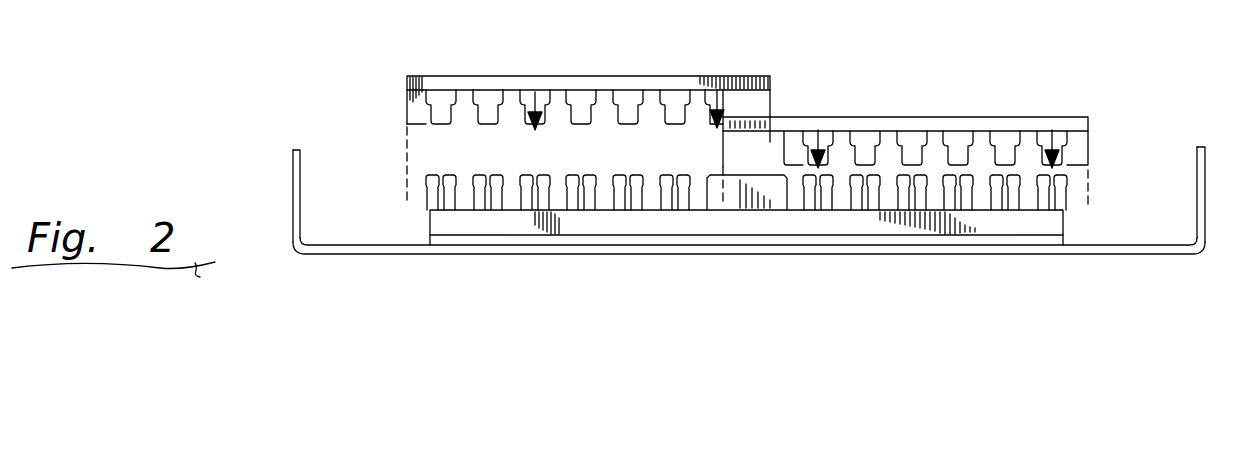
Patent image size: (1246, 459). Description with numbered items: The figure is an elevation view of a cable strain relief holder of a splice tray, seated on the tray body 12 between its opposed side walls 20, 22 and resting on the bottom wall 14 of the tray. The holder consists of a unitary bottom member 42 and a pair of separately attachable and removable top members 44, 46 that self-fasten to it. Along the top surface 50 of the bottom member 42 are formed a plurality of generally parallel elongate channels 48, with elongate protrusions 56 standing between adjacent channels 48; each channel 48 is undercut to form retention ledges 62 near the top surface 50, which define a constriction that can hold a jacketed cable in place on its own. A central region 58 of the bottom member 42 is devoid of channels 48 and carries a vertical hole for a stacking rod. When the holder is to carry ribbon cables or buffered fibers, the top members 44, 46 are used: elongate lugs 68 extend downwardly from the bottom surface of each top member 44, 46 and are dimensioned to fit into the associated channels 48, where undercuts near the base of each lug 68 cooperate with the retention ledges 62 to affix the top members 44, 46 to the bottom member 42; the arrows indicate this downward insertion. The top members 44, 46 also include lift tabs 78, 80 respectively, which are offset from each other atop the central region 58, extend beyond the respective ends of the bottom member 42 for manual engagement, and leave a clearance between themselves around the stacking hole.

The tray body 12 is at (282, 160).
The bottom wall 14 is at (1134, 245).
The side wall 20 is at (300, 176).
The side wall 22 is at (1197, 177).
The bottom member 42 is at (452, 228).
The top member 44 is at (528, 77).
The top member 46 is at (892, 117).
The channel 48 is at (513, 192).
The top surface 50 is at (522, 192).
The elongate protrusion 56 is at (637, 184).
The central region 58 is at (762, 176).
The retention ledge 62 is at (667, 184).
The elongate lug 68 is at (462, 112).
The lift tab 78 is at (741, 77).
The lift tab 80 is at (733, 119).